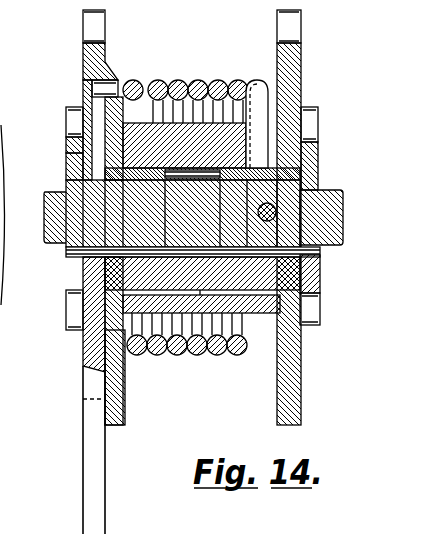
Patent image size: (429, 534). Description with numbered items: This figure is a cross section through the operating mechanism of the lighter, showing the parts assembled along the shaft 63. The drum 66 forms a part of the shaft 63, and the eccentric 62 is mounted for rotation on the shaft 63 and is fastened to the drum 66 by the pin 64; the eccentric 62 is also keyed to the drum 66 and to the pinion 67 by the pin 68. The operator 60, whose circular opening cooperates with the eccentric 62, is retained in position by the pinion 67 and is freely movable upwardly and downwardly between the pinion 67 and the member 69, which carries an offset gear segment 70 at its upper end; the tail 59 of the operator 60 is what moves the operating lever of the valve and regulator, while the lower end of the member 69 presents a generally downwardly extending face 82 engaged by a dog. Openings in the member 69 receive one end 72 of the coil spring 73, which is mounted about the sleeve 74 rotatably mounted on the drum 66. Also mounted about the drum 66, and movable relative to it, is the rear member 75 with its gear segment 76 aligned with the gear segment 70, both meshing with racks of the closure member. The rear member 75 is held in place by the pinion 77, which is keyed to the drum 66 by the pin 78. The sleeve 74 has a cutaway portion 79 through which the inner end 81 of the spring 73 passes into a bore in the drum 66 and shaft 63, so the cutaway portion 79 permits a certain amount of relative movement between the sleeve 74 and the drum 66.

The tail 59 is at (84, 476).
The operator 60 is at (82, 124).
The eccentric 62 is at (80, 154).
The shaft 63 is at (333, 197).
The pin 64 is at (70, 175).
The drum 66 is at (175, 80).
The pinion 67 is at (73, 276).
The pin 68 is at (70, 249).
The member 69 is at (118, 88).
The offset gear segment 70 is at (88, 23).
The end of coil spring 72 is at (100, 89).
The coil spring 73 is at (198, 360).
The sleeve 74 is at (218, 79).
The rear member 75 is at (288, 64).
The gear segment 76 is at (288, 28).
The pinion 77 is at (318, 281).
The pin 78 is at (305, 251).
The cutaway portion 79 is at (248, 145).
The inner end of spring 81 is at (262, 117).
The face 82 is at (128, 412).